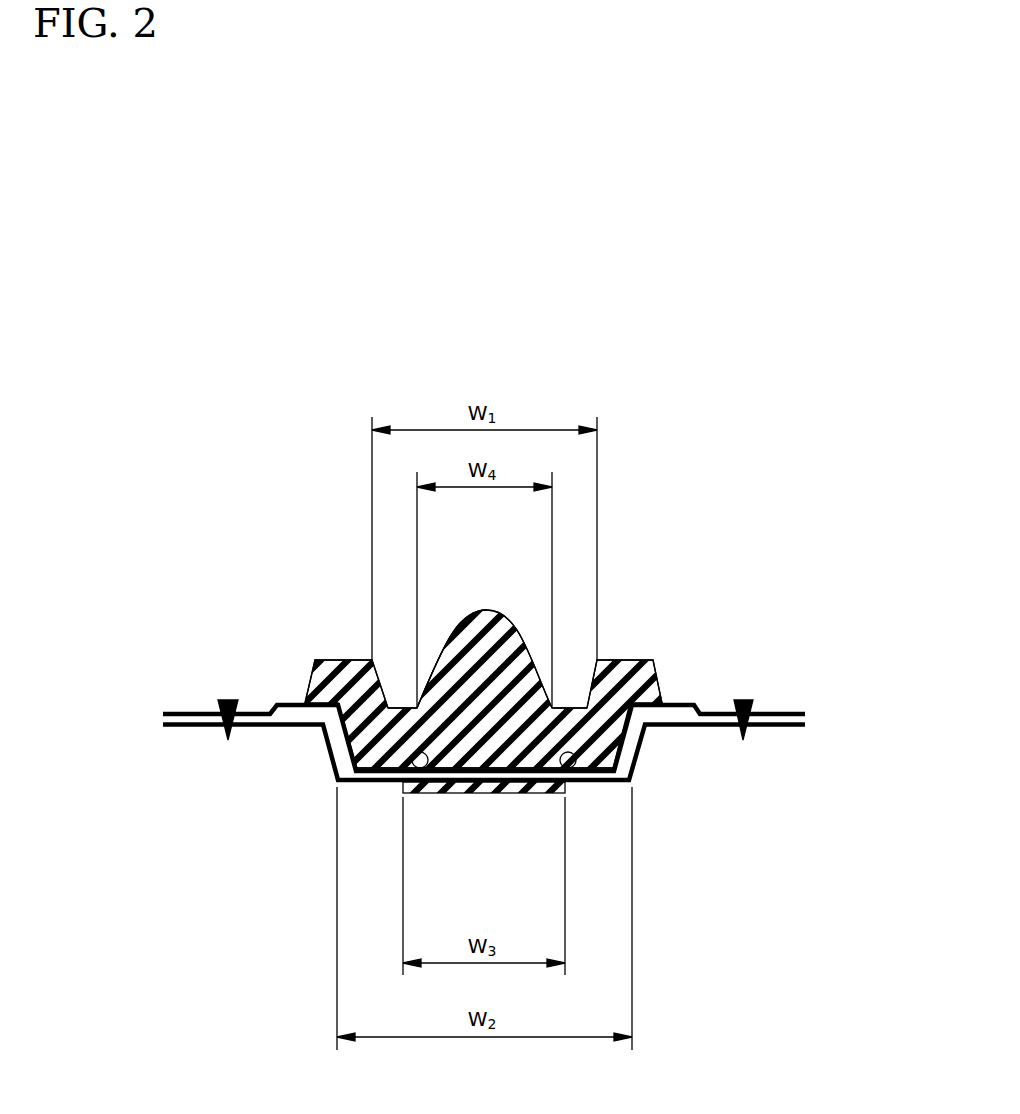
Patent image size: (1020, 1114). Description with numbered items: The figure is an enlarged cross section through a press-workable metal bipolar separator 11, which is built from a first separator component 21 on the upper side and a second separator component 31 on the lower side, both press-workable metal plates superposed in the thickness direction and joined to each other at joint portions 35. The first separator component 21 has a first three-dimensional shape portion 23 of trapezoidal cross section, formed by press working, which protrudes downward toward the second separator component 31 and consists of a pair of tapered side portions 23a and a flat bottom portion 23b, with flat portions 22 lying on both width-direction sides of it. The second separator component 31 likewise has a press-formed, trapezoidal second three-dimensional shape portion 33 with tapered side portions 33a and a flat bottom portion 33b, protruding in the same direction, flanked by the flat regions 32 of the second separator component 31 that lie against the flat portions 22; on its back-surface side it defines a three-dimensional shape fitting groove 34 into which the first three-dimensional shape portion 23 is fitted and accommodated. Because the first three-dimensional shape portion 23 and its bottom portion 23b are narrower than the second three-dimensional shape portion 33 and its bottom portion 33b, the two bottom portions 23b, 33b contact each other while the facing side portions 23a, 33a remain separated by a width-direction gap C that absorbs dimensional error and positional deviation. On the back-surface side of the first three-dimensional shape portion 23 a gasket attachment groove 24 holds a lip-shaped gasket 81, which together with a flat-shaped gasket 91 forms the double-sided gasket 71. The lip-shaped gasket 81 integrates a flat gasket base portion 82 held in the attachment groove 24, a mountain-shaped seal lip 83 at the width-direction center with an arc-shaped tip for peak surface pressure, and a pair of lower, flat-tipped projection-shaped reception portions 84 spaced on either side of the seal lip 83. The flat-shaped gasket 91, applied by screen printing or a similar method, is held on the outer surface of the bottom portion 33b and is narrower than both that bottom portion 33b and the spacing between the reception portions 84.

The separator 11 is at (541, 753).
The first separator component 21 is at (782, 712).
The flat portions 22 is at (711, 712).
The first three-dimensional shape portion 23 is at (591, 781).
The side portions 23a is at (325, 733).
The bottom portion 23b is at (533, 773).
The gasket attachment groove 24 is at (576, 776).
The second separator component 31 is at (780, 728).
The flat portion of second sheet layer 32 is at (718, 728).
The second three-dimensional shape portion 33 is at (384, 781).
The side portions 33a is at (337, 772).
The bottom portion 33b is at (445, 780).
The three-dimensional shape fitting groove 34 is at (398, 772).
The joint portions 35 is at (225, 700).
The gasket 71 is at (270, 630).
The lip-shaped gasket 81 is at (477, 612).
The gasket base portion 82 is at (517, 753).
The seal lip 83 is at (468, 663).
The reception portions 84 is at (362, 672).
The flat-shaped gasket 91 is at (483, 788).
The gap C is at (330, 762).